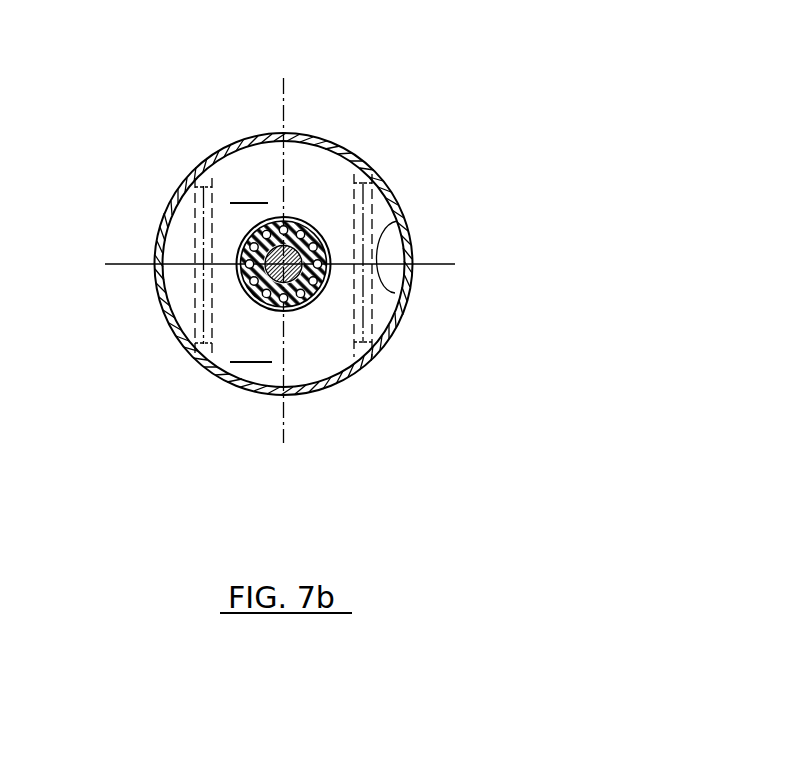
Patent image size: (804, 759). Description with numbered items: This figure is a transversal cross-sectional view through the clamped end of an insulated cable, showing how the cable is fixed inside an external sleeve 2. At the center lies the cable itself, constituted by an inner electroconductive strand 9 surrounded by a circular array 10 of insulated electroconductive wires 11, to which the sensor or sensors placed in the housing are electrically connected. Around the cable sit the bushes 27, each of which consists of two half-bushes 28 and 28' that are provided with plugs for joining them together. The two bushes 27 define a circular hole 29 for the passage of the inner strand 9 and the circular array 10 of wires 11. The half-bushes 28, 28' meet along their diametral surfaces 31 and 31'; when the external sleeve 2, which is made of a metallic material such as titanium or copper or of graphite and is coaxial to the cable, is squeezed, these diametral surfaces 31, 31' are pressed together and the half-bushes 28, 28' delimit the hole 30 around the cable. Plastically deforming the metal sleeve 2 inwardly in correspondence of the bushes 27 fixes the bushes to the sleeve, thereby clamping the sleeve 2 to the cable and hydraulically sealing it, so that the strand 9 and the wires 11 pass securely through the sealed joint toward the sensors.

The sleeve 2 is at (383, 342).
The inner electroconductive strand 9 is at (305, 223).
The circular array of insulated electroconductive wires 10 is at (292, 216).
The insulated electroconductive wires 11 is at (243, 245).
The bushes 27 is at (254, 386).
The half-bush 28 is at (250, 189).
The half-bush 28' is at (254, 345).
The circular hole 29 is at (197, 297).
The hole 30 is at (305, 308).
The diametral surface 31 is at (320, 302).
The diametral surface 31' is at (455, 226).